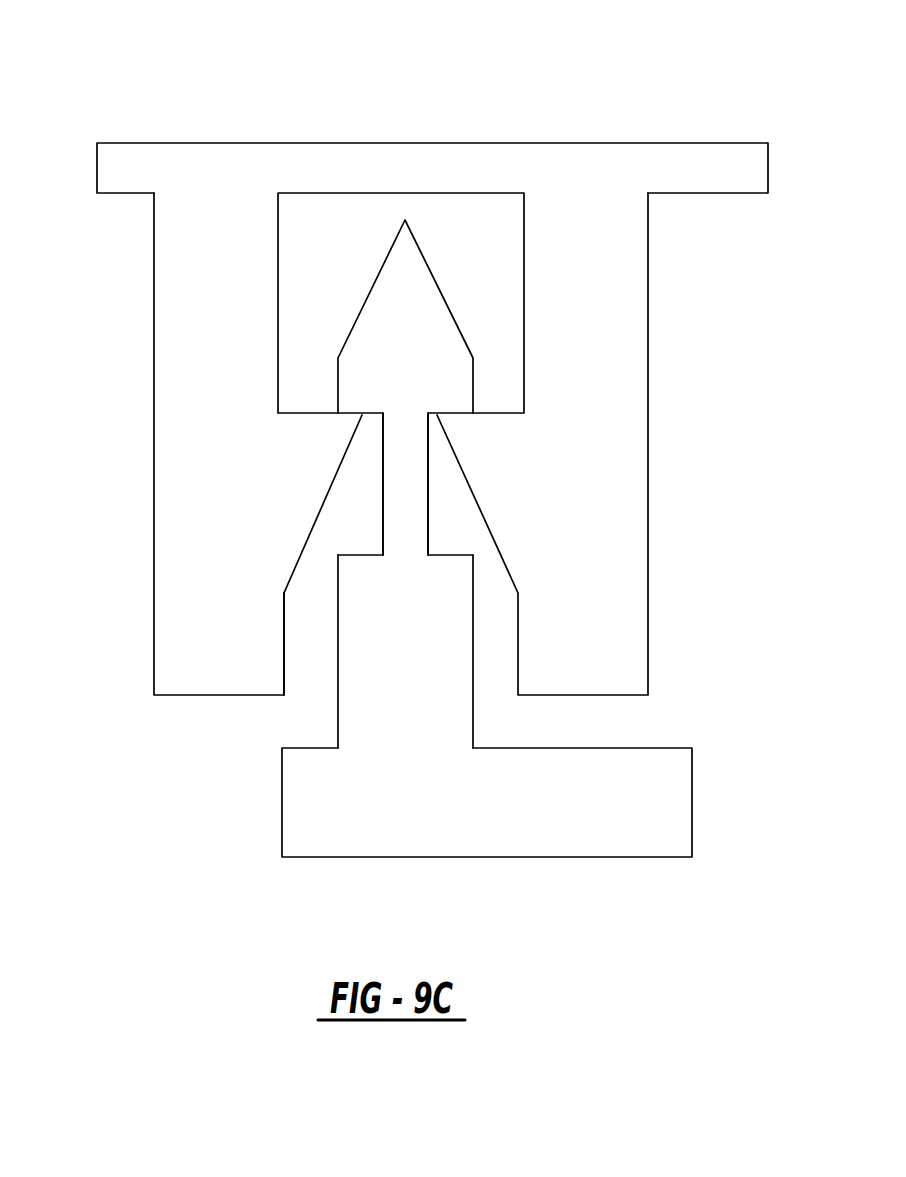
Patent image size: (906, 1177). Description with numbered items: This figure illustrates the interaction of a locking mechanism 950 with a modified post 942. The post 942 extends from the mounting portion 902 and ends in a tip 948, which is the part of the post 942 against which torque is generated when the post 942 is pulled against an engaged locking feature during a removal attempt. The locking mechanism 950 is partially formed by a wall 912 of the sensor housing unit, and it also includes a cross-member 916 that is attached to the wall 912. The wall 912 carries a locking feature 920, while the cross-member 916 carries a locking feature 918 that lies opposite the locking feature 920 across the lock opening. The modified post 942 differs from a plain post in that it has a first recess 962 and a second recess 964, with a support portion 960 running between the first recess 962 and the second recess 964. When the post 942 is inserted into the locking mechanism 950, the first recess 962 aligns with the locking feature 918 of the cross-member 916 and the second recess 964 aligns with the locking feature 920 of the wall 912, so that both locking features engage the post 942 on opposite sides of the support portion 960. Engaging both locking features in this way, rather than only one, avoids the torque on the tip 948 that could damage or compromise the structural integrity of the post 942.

The locking mechanism 950 is at (580, 92).
The tip 948 is at (403, 290).
The cross-member 916 is at (182, 303).
The wall 912 is at (622, 307).
The locking feature 918 is at (343, 426).
The locking feature 920 is at (460, 424).
The first recess 962 is at (357, 523).
The second recess 964 is at (452, 525).
The support portion 960 is at (400, 478).
The post 942 is at (330, 663).
The mounting portion 902 is at (619, 823).